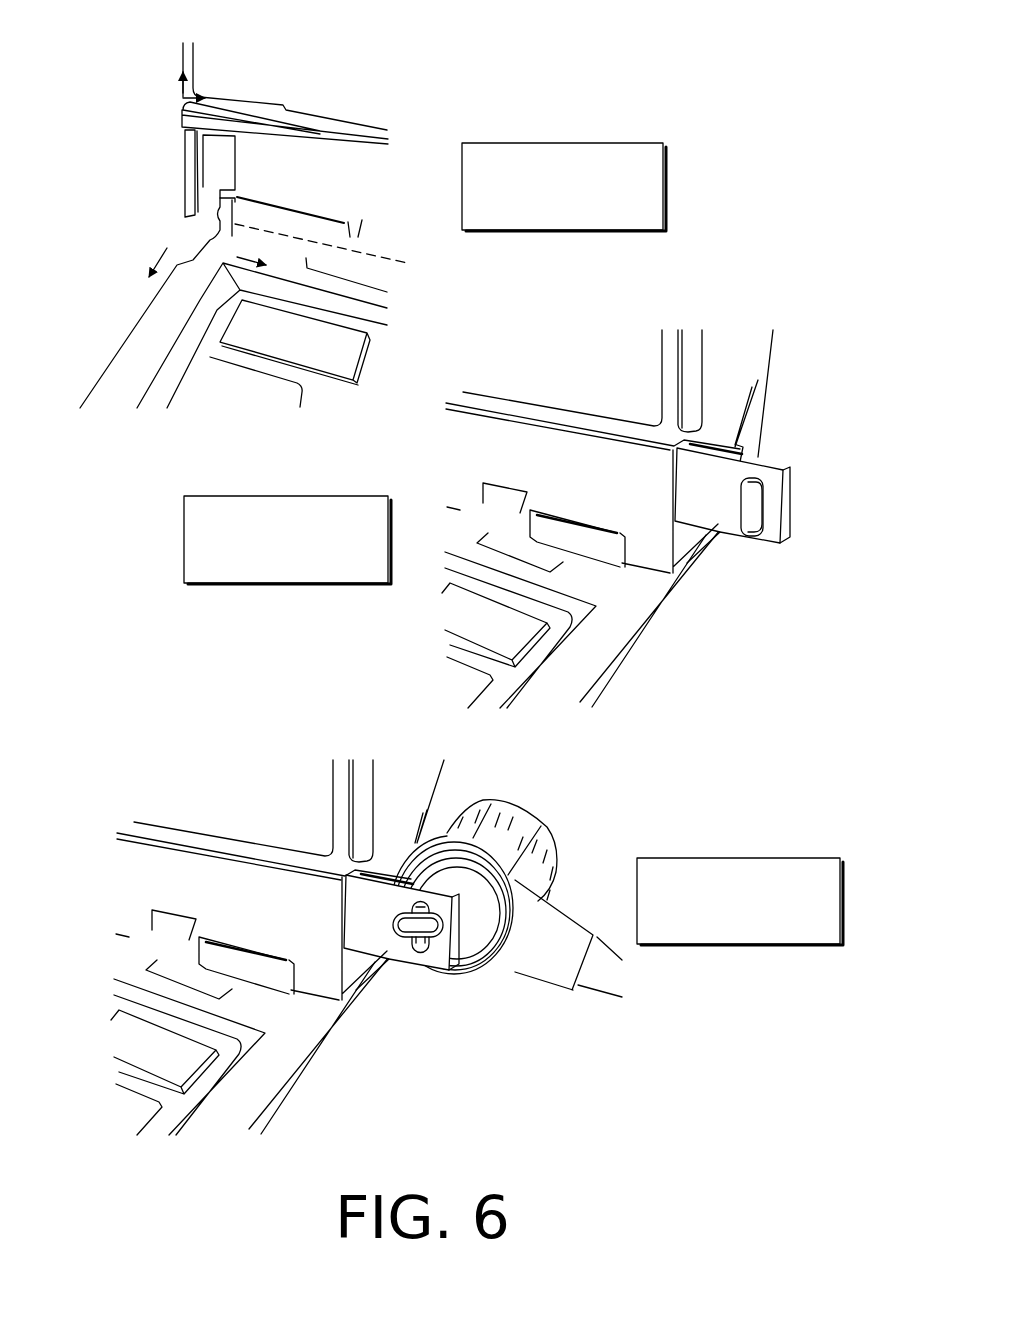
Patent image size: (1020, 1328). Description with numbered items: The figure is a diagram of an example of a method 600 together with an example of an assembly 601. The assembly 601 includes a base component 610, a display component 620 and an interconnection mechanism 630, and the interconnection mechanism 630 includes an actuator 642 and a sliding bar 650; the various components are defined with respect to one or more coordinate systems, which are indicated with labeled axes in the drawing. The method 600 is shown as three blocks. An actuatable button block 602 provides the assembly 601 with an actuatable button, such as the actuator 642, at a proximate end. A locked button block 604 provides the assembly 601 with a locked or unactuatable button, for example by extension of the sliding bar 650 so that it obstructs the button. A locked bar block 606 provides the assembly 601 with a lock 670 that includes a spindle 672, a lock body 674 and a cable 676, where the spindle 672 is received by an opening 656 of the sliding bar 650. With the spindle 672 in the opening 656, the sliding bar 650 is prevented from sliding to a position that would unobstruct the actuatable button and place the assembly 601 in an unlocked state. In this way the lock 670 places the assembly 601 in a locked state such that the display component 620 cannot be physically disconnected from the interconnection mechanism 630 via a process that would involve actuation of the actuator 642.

The method 600 is at (510, 56).
The assembly 601 is at (149, 102).
The actuatable button block 602 is at (579, 209).
The locked button block 604 is at (302, 562).
The locked bar block 606 is at (754, 925).
The base component 610 is at (170, 351).
The display component 620 is at (283, 75).
The interconnection mechanism 630 is at (303, 182).
The actuator 642 is at (191, 156).
The sliding bar 650 is at (760, 545).
The opening 656 is at (756, 477).
The lock 670 is at (523, 910).
The spindle 672 is at (420, 952).
The lock body 674 is at (505, 803).
The cable 676 is at (597, 967).